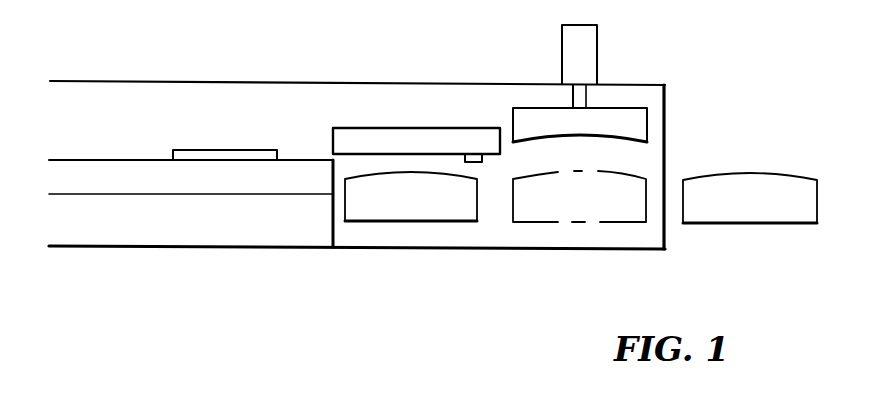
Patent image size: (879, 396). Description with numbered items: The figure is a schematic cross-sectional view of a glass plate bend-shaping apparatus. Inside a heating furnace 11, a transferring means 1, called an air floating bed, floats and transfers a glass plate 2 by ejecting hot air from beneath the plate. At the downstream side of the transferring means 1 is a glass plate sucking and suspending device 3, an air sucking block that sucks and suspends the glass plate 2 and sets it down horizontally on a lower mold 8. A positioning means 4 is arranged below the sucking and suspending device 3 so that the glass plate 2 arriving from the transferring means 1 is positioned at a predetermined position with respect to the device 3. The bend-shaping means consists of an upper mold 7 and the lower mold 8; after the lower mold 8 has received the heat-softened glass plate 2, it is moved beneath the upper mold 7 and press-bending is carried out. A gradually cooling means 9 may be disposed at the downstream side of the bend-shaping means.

The transferring means 1 is at (185, 188).
The glass plate 2 is at (240, 157).
The glass plate sucking and suspending device 3 is at (400, 140).
The positioning means 4 is at (478, 155).
The upper mold 7 is at (622, 118).
The lower mold 8 is at (417, 212).
The gradually cooling means 9 is at (760, 215).
The heating furnace 11 is at (192, 68).